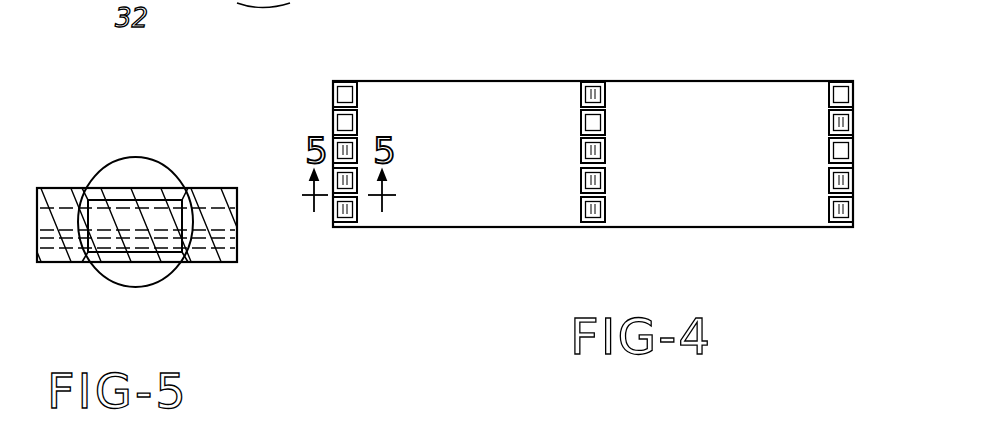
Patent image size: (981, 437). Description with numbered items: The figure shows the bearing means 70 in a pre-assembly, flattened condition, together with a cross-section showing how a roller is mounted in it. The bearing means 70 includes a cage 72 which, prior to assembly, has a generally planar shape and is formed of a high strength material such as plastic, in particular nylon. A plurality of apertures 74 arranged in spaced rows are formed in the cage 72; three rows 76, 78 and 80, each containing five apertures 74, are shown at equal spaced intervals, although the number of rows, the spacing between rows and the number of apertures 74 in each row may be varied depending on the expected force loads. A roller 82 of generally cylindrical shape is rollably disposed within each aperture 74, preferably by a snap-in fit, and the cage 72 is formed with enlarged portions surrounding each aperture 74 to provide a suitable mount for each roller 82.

In FIG. 4, the bearing means 70 is at (687, 237).
In FIG. 4, the cage 72 is at (496, 217).
In FIG. 5, the cage 72 is at (45, 264).
In FIG. 5, the aperture 74 is at (187, 250).
In FIG. 4, the first row of apertures 76 is at (345, 82).
In FIG. 4, the second row of apertures 78 is at (590, 82).
In FIG. 4, the third row of apertures 80 is at (846, 80).
In FIG. 4, the roller 82 is at (350, 121).
In FIG. 5, the roller 82 is at (98, 173).